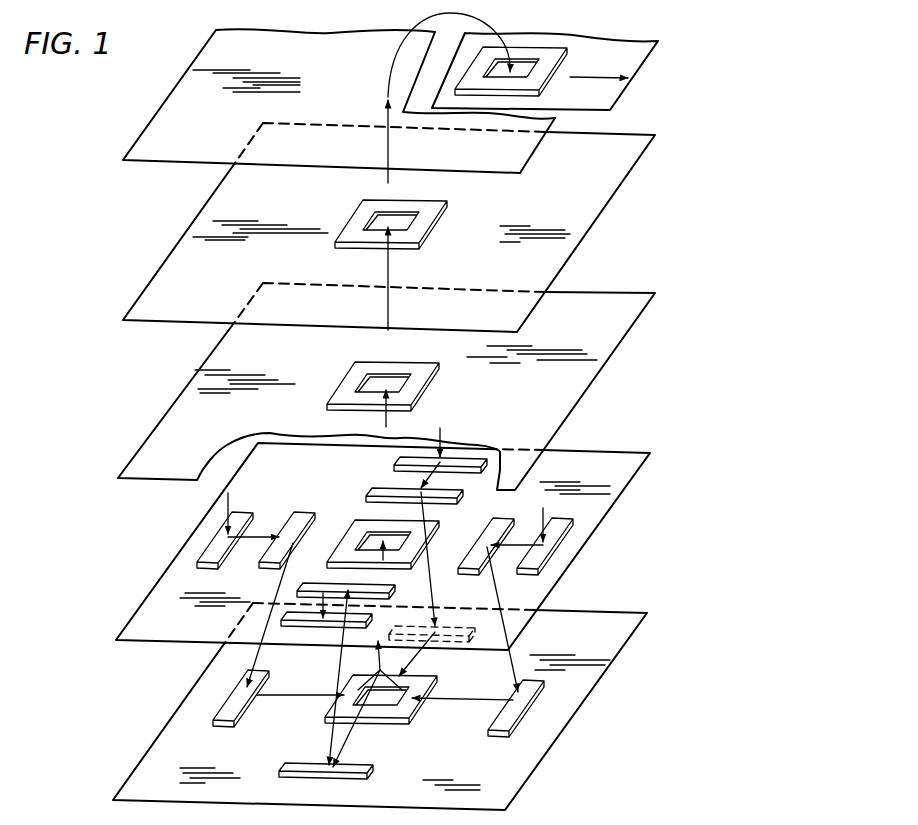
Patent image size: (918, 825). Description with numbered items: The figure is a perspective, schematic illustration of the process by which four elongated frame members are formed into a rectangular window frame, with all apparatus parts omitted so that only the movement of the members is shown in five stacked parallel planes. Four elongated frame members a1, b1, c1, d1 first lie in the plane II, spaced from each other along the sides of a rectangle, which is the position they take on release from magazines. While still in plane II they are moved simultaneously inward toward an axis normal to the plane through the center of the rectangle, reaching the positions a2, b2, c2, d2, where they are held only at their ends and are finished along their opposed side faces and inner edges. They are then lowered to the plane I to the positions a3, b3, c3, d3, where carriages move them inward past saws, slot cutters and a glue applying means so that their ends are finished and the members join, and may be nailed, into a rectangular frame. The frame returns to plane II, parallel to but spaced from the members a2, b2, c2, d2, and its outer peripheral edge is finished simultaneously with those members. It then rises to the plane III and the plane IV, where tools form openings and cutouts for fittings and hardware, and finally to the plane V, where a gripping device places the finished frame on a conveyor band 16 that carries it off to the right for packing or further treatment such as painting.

The conveyor band 16 is at (596, 64).
The plane I is at (380, 706).
The plane II is at (383, 546).
The plane III is at (418, 386).
The plane IV is at (423, 227).
The plane V is at (449, 101).
The elongated frame member a in first position a1 is at (246, 517).
The elongated frame member a in second position a2 is at (306, 515).
The elongated frame member a in third position a3 is at (232, 712).
The elongated frame member b in first position b1 is at (285, 629).
The elongated frame member b in second position b2 is at (313, 583).
The elongated frame member b in third position b3 is at (349, 773).
The elongated frame member c in first position c1 is at (518, 571).
The elongated frame member c in second position c2 is at (459, 569).
The elongated frame member c in third position c3 is at (502, 724).
The elongated frame member d in first position d1 is at (397, 457).
The elongated frame member d in second position d2 is at (372, 493).
The elongated frame member d in third position d3 is at (470, 636).